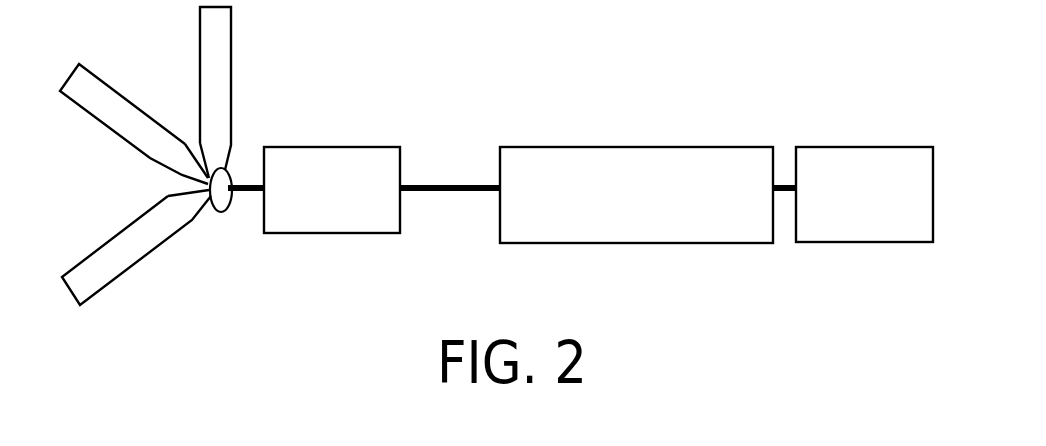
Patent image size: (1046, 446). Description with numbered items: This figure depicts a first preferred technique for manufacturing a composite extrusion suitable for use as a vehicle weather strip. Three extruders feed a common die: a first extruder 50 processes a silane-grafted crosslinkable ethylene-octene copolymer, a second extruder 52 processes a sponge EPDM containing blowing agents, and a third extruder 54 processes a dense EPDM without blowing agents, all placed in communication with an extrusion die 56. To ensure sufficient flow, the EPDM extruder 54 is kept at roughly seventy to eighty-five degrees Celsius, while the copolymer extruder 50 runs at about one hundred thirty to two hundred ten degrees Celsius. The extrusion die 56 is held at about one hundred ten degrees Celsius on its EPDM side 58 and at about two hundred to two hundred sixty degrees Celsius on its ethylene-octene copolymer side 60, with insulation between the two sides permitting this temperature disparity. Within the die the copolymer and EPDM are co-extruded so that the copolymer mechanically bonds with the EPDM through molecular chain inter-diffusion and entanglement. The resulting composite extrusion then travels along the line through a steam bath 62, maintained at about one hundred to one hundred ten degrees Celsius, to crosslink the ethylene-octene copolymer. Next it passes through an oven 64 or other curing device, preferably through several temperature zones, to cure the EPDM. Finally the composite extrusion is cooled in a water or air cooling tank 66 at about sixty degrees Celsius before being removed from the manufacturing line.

The first extruder 50 is at (222, 52).
The second extruder 52 is at (108, 98).
The third extruder 54 is at (138, 228).
The extrusion die 56 is at (212, 213).
The EPDM side 58 is at (233, 205).
The ethylene-octene copolymer side 60 is at (232, 165).
The steam bath 62 is at (335, 143).
The oven 64 is at (608, 145).
The cooling tank 66 is at (828, 143).